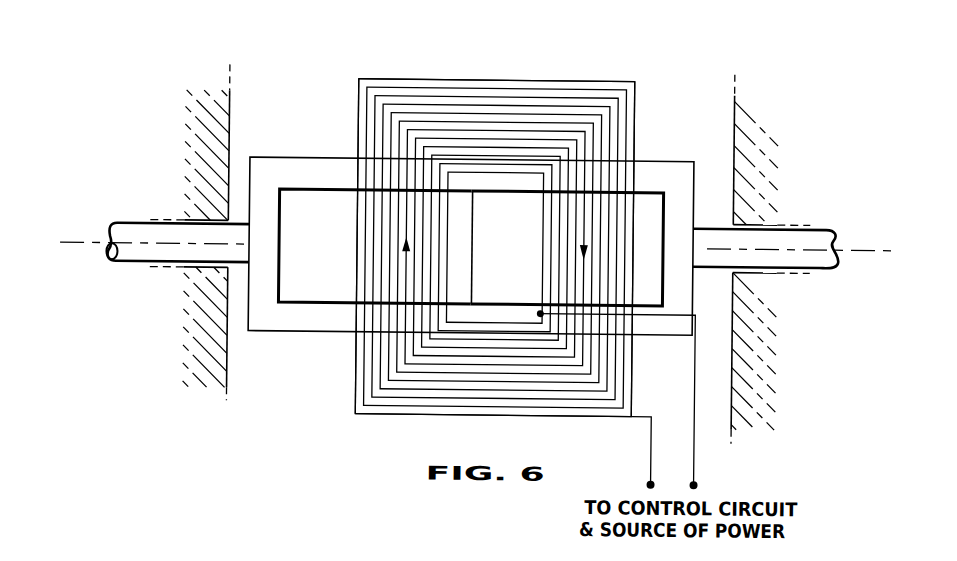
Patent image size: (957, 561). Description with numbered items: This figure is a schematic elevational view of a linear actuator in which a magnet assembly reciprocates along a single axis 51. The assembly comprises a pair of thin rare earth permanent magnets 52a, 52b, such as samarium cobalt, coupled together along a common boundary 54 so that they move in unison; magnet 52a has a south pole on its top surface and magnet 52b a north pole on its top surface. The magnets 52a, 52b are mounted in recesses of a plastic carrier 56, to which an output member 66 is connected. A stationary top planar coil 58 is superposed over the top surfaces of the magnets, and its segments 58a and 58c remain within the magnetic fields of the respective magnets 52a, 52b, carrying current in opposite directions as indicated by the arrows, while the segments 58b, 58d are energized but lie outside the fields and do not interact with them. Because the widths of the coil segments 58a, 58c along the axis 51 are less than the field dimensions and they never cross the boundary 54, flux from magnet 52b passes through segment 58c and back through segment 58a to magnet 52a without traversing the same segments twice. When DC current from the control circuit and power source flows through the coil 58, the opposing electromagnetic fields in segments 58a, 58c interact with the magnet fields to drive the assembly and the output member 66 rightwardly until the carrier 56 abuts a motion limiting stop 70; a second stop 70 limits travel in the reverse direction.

The axis 51 is at (83, 242).
The permanent magnet 52a is at (327, 192).
The permanent magnet 52b is at (643, 197).
The common boundary 54 is at (472, 228).
The plastic carrier 56 is at (692, 177).
The top planar coil 58 is at (398, 74).
The coil segment 58a is at (373, 370).
The coil segment 58b is at (493, 90).
The coil segment 58c is at (613, 350).
The coil segment 58d is at (450, 405).
The output member 66 is at (137, 228).
The motion limiting stop 70 is at (228, 353).